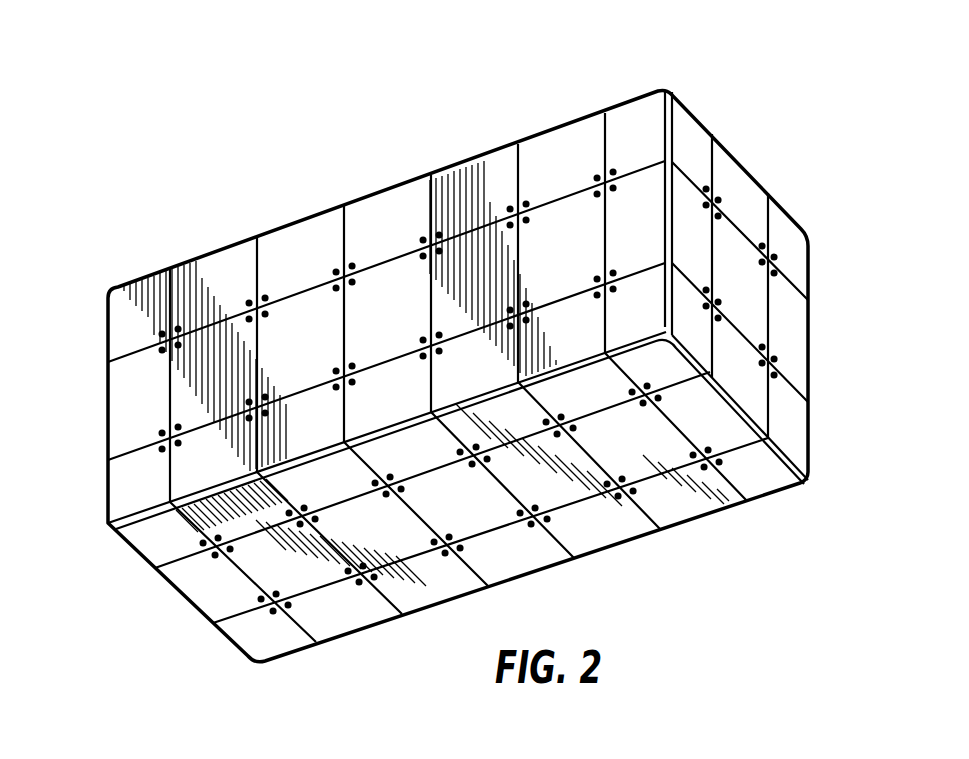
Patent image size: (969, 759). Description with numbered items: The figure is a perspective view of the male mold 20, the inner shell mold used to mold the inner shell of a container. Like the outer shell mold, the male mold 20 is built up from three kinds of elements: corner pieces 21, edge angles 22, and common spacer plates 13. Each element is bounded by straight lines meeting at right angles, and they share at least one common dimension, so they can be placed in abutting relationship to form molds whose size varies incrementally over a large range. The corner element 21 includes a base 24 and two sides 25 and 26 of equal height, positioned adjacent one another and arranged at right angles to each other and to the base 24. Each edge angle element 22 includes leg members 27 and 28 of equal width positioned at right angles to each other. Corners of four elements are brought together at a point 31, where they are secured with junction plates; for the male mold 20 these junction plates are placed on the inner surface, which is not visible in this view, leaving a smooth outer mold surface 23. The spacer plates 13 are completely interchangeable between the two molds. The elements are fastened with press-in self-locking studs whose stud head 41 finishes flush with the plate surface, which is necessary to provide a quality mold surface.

The common spacer plate 13 is at (463, 242).
The male mold 20 is at (199, 243).
The corner piece 21 is at (106, 526).
The edge angle 22 is at (669, 193).
The smooth outer mold surface 23 is at (223, 273).
The base 24 is at (673, 372).
The side 25 is at (630, 290).
The side 26 is at (702, 342).
The leg member 27 is at (638, 183).
The leg member 28 is at (703, 240).
The point 31 is at (162, 337).
The stud head 41 is at (162, 450).